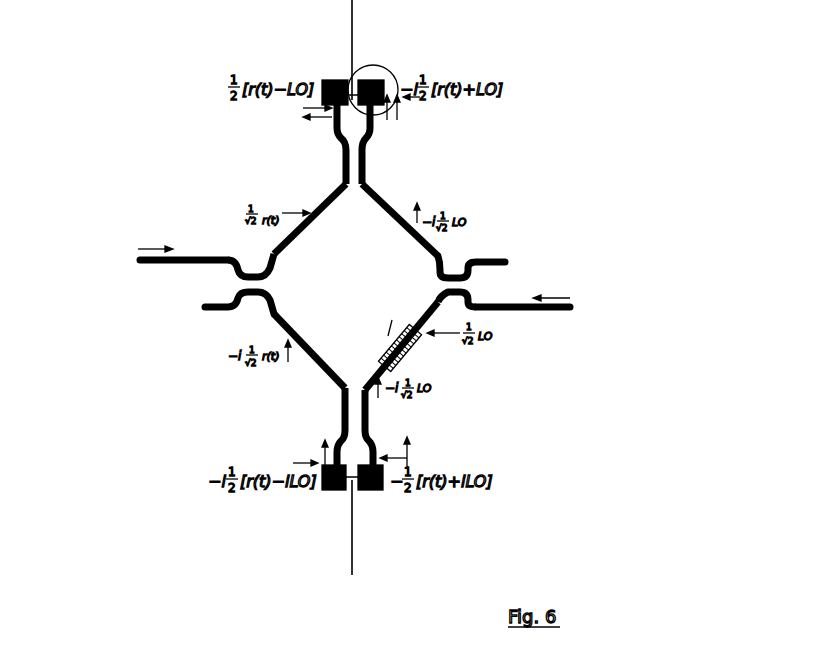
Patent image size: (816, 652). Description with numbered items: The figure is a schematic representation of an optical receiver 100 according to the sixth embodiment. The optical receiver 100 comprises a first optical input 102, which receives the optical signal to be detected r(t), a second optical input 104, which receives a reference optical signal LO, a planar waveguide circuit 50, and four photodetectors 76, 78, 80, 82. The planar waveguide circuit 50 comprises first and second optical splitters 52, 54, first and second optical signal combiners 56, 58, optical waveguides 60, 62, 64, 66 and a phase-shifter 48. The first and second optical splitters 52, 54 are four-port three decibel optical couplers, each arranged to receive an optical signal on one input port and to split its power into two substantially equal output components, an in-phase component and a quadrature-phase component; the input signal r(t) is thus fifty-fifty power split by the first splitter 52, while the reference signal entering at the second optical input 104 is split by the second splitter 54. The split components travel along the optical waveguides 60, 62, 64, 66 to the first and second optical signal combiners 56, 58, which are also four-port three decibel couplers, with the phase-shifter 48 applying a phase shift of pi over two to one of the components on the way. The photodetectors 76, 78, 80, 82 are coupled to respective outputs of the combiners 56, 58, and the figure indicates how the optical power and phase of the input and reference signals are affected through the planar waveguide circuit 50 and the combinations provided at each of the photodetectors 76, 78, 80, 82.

The optical receiver 100 is at (606, 91).
The planar waveguide circuit 50 is at (497, 186).
The first optical splitter 52 is at (245, 260).
The second optical splitter 54 is at (458, 265).
The first optical signal combiner 56 is at (376, 157).
The second optical signal combiner 58 is at (331, 412).
The optical waveguide 60 is at (321, 204).
The optical waveguide 62 is at (313, 360).
The optical waveguide 64 is at (385, 202).
The optical waveguide 66 is at (365, 380).
The phase-shifter 48 is at (423, 340).
The photodetector 76 is at (328, 80).
The photodetector 78 is at (370, 88).
The photodetector 80 is at (378, 492).
The photodetector 82 is at (332, 492).
The first optical input 102 is at (152, 267).
The second optical input 104 is at (558, 313).